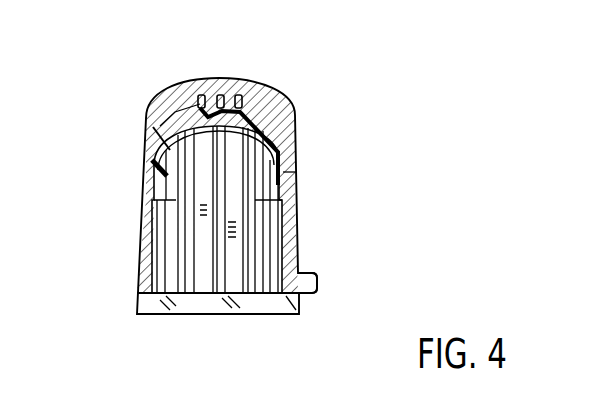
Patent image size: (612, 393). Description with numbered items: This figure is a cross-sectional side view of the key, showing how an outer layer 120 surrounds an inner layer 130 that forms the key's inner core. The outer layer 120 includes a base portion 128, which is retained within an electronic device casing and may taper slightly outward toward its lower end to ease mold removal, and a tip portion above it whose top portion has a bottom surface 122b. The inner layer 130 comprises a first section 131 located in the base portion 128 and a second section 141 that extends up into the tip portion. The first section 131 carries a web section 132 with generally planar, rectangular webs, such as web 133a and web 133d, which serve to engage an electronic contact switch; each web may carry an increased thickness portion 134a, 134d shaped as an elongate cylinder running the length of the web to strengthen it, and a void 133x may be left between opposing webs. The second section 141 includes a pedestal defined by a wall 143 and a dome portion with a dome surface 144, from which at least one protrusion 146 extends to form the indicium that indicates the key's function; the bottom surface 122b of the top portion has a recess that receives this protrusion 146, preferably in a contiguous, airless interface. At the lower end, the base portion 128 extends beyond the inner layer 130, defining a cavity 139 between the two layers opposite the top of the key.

The outer layer 120 is at (296, 121).
The bottom surface 122b is at (170, 110).
The base portion 128 is at (137, 305).
The inner layer 130 is at (152, 146).
The first section 131 is at (268, 250).
The web section 132 is at (150, 238).
The web 133a is at (155, 263).
The web 133d is at (300, 298).
The void 133x is at (218, 353).
The increased thickness portion 134a is at (192, 297).
The increased thickness portion 134d is at (257, 297).
The cavity 139 is at (158, 313).
The second section 141 is at (283, 153).
The wall 143 is at (297, 174).
The dome surface 144 is at (165, 123).
The protrusion 146 is at (238, 96).